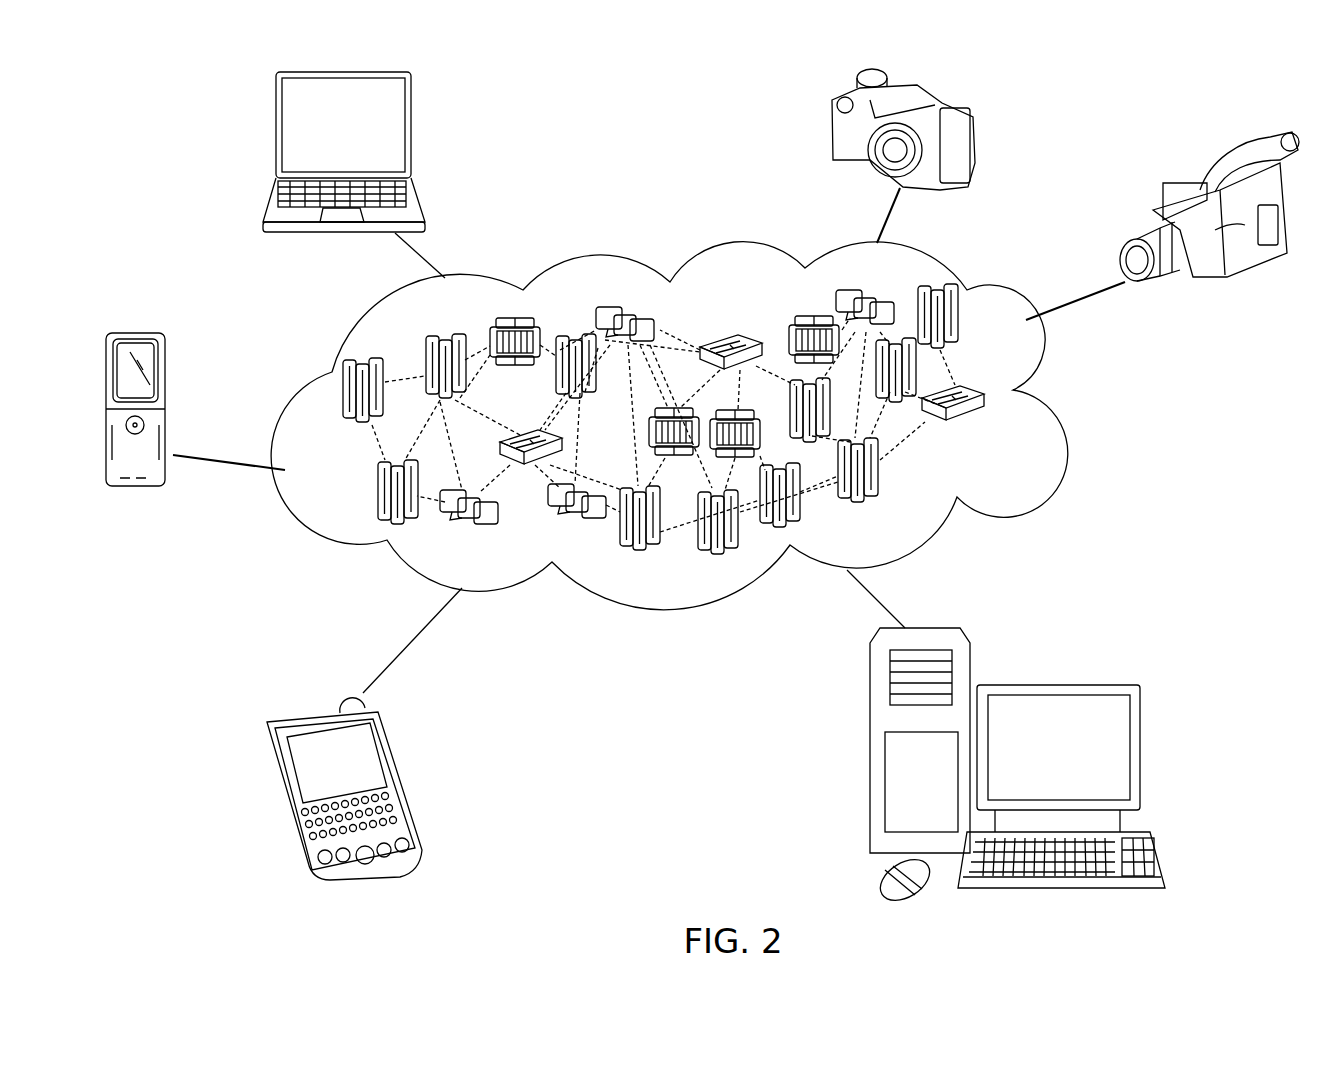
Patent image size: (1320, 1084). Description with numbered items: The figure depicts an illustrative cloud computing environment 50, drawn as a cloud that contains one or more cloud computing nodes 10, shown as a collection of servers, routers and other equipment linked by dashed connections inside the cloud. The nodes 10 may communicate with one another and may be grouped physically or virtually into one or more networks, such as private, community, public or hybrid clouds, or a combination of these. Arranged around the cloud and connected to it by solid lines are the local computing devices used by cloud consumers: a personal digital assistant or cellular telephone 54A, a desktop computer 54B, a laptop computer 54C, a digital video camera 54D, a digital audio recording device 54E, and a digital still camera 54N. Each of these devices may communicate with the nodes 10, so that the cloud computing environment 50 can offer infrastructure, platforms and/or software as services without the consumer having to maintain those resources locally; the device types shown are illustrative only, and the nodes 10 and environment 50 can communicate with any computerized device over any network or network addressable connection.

The cloud computing node 10 is at (1003, 430).
The cloud computing environment 50 is at (1056, 402).
The personal digital assistant or cellular telephone 54A is at (400, 777).
The desktop computer 54B is at (1056, 685).
The laptop computer 54C is at (412, 133).
The digital video camera 54D is at (1226, 277).
The digital audio recording device 54E is at (128, 490).
The digital still camera 54N is at (830, 138).